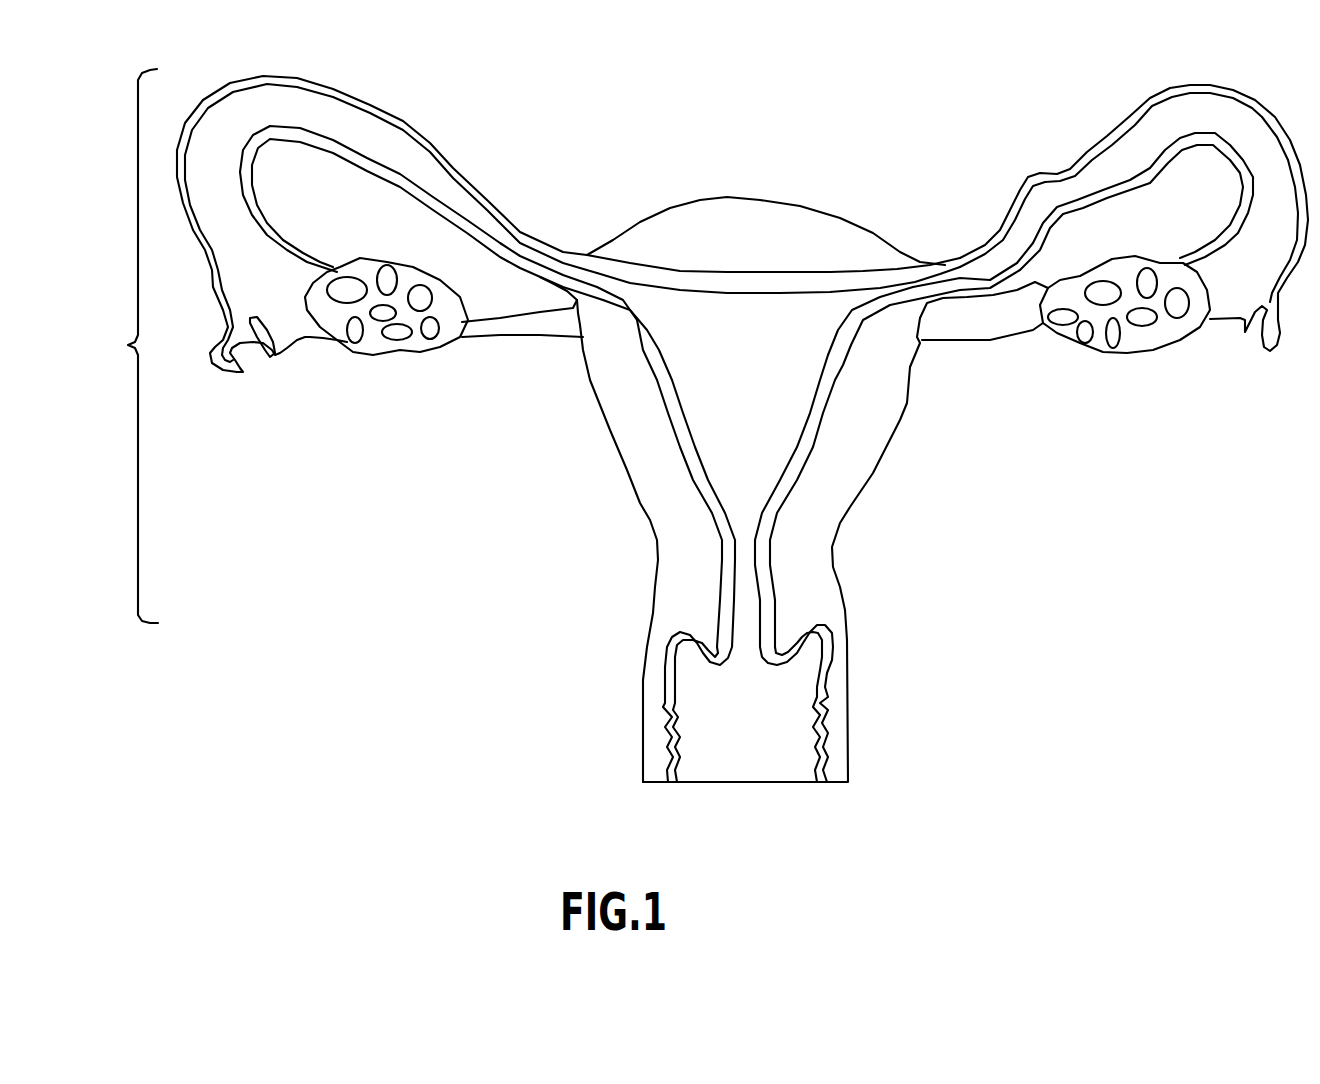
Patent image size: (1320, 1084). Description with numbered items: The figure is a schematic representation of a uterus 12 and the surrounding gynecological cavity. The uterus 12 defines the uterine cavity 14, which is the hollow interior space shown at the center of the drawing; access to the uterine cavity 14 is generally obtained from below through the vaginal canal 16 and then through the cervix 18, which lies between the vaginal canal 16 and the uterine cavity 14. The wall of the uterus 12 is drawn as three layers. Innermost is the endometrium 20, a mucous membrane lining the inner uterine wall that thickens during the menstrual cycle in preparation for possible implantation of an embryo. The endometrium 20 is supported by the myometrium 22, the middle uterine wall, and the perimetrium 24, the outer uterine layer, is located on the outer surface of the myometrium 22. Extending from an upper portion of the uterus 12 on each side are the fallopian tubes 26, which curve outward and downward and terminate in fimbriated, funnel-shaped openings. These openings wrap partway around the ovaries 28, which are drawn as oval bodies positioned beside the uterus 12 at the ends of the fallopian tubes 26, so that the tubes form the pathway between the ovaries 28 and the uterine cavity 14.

The uterus 12 is at (125, 346).
The uterine cavity 14 is at (929, 450).
The vaginal canal 16 is at (899, 729).
The cervix 18 is at (861, 664).
The endometrium 20 is at (659, 427).
The myometrium 22 is at (622, 490).
The perimetrium 24 is at (651, 489).
The fallopian tubes 26 is at (742, 224).
The ovaries 28 is at (757, 248).